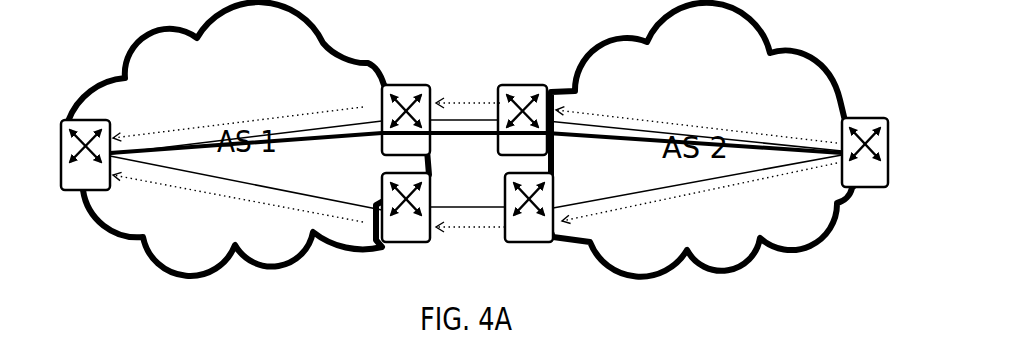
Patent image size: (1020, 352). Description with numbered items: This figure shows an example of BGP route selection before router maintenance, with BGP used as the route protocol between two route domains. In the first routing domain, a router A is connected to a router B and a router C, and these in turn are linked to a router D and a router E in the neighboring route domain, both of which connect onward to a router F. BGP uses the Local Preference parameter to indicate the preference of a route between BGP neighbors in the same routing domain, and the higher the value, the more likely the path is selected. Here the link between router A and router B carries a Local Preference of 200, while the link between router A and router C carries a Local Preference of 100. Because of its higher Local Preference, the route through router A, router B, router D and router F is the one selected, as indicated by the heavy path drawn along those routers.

The router A is at (85, 155).
The router B is at (406, 120).
The router C is at (406, 207).
The router D is at (522, 120).
The router E is at (529, 207).
The router F is at (865, 152).
The Local Preference value of the link between routers A and B 200 is at (238, 117).
The Local Preference value of the link between routers A and C 100 is at (234, 199).